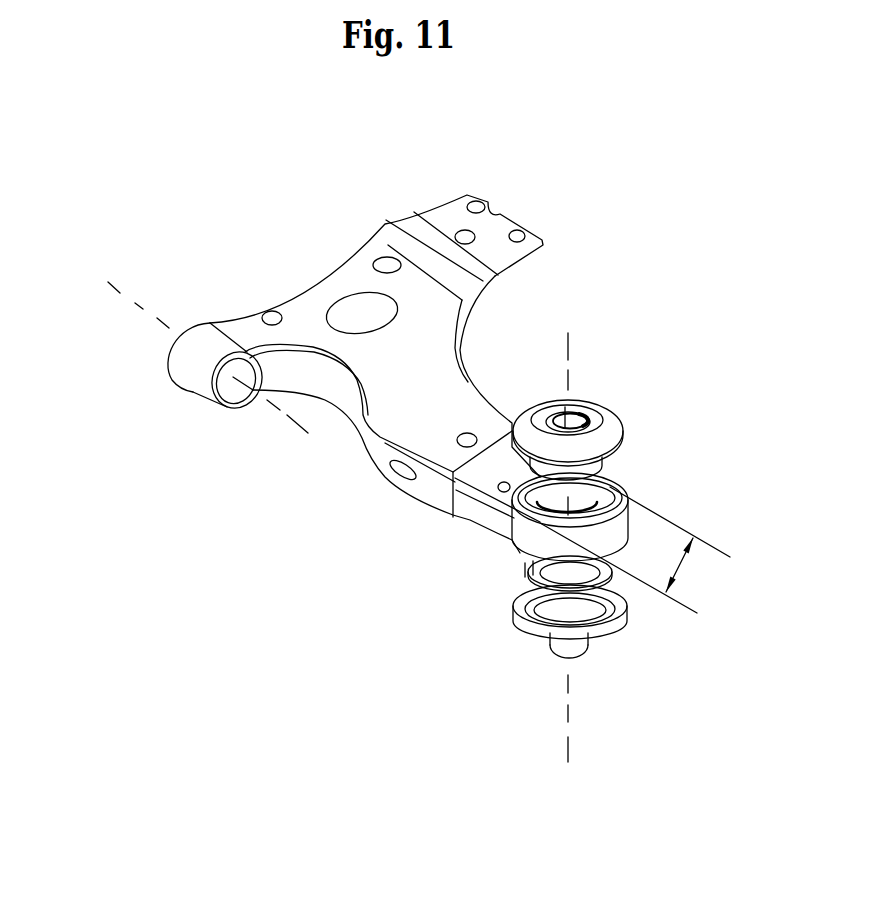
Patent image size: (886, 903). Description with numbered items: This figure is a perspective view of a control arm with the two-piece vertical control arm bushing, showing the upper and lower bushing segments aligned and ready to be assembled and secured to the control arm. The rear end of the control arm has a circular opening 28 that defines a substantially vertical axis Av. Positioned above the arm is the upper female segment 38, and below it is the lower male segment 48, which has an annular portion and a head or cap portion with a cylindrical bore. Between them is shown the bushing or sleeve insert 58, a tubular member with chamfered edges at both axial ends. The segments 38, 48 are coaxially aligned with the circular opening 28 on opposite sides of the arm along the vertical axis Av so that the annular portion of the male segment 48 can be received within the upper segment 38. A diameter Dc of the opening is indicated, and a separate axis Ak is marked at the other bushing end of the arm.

The circular opening 28 is at (610, 503).
The upper female segment 38 is at (609, 401).
The lower male segment 48 is at (507, 613).
The bushing or sleeve insert 58 is at (525, 568).
The bearing seat diameter Dc is at (680, 563).
The vertical axis Av is at (571, 750).
The bushing axis Ak is at (112, 290).